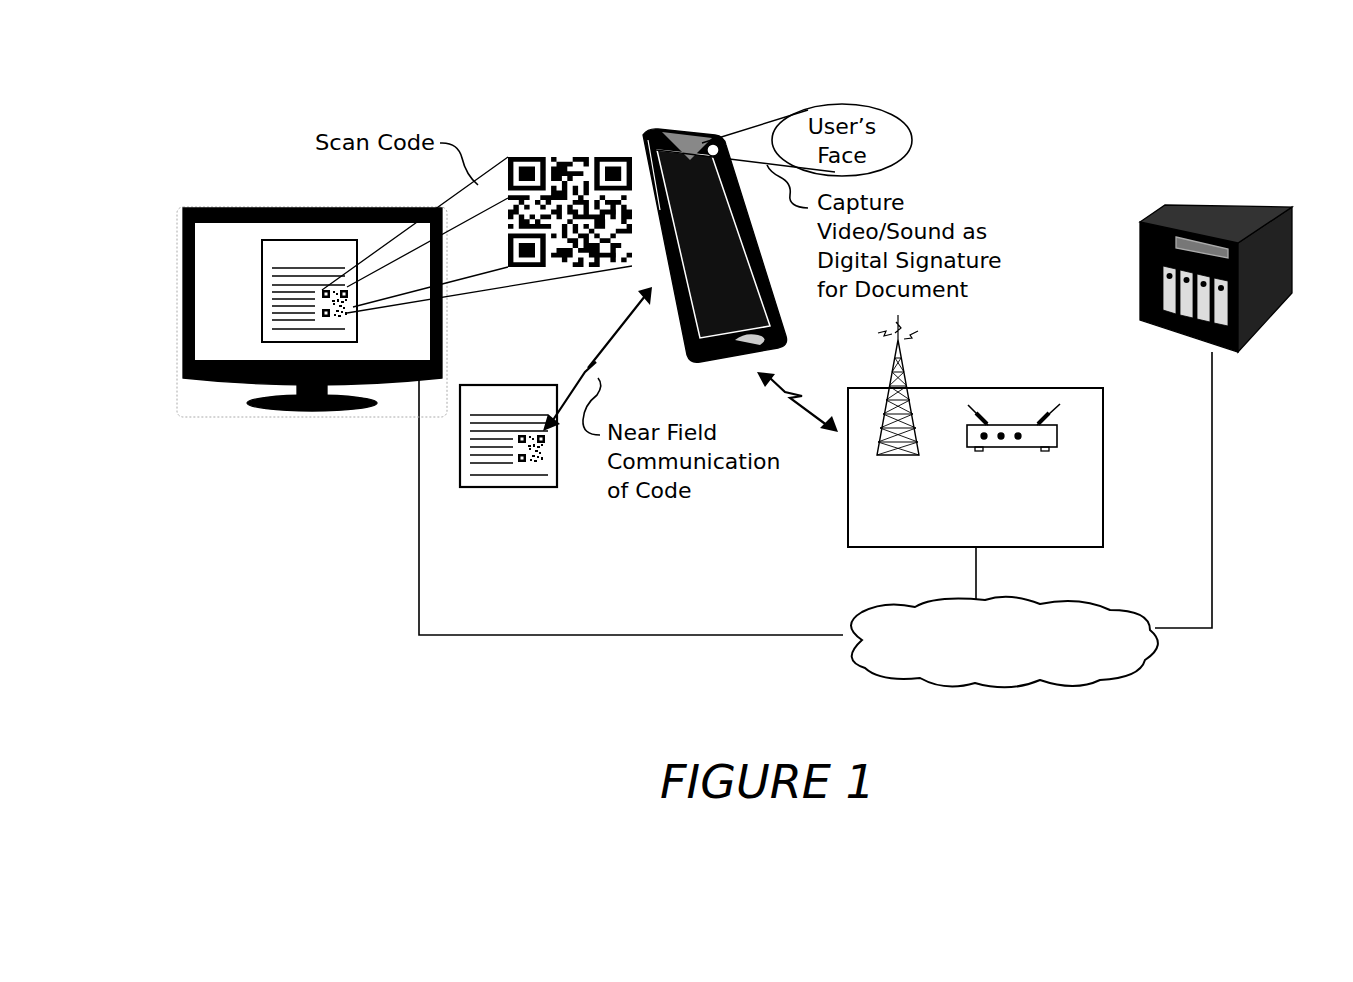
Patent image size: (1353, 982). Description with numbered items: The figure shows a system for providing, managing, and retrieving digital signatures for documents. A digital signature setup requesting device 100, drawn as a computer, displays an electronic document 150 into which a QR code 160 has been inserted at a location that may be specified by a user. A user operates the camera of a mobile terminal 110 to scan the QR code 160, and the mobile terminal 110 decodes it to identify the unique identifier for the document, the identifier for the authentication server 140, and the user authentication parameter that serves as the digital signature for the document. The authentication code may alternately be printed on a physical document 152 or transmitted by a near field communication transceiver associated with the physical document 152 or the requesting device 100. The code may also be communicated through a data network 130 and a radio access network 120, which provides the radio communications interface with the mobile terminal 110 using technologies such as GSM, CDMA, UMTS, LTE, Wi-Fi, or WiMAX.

The digital signature setup requesting device 100 is at (273, 215).
The mobile terminal 110 is at (655, 132).
The radio access network (RAN) 120 is at (975, 431).
The data network 130 is at (1004, 642).
The authentication server 140 is at (1160, 212).
The electronic document 150 is at (262, 300).
The physical document 152 is at (500, 487).
The QR code 160 is at (562, 157).